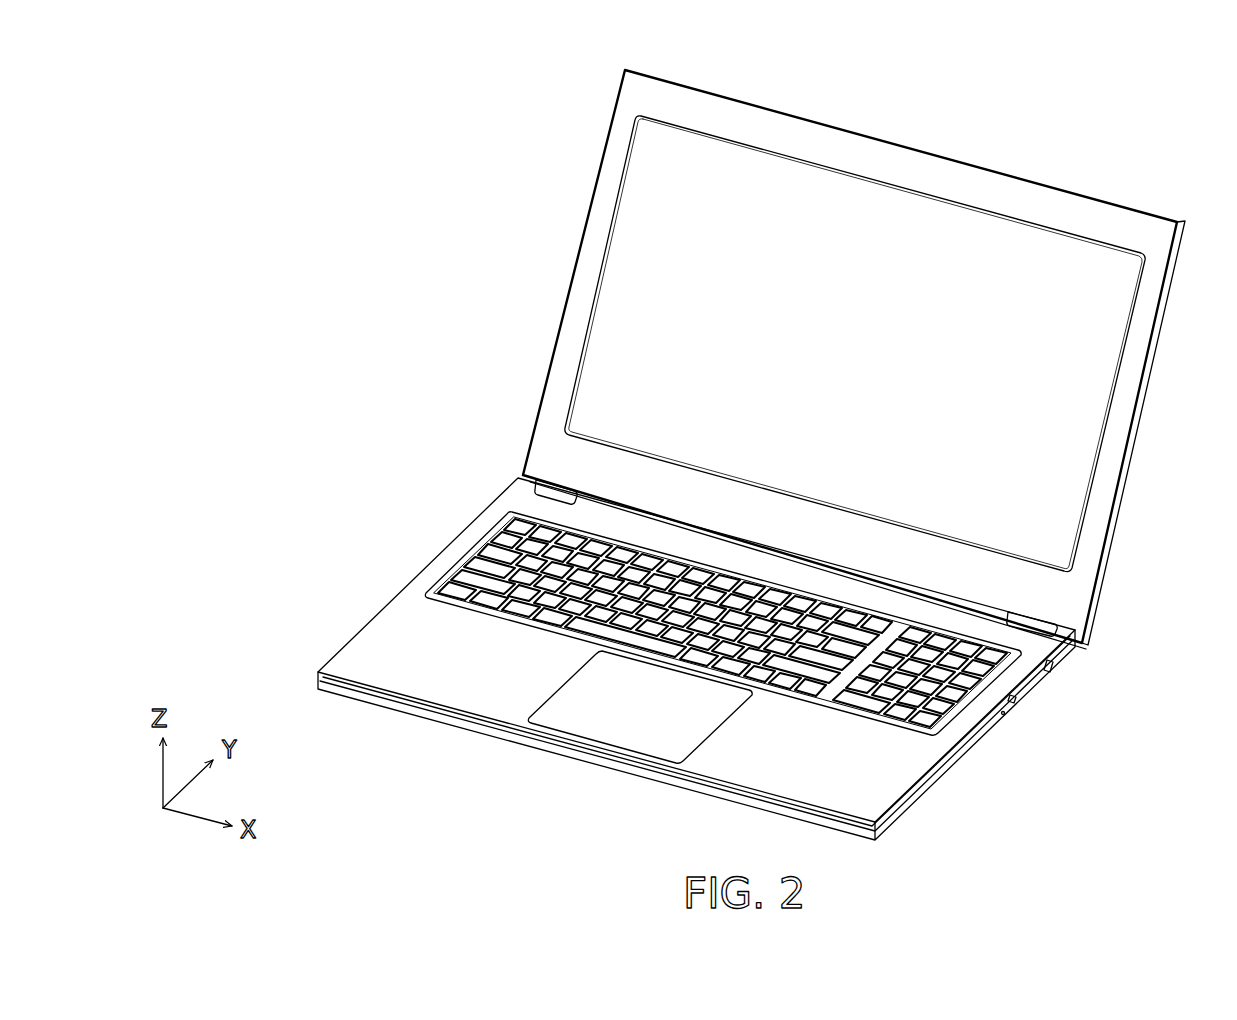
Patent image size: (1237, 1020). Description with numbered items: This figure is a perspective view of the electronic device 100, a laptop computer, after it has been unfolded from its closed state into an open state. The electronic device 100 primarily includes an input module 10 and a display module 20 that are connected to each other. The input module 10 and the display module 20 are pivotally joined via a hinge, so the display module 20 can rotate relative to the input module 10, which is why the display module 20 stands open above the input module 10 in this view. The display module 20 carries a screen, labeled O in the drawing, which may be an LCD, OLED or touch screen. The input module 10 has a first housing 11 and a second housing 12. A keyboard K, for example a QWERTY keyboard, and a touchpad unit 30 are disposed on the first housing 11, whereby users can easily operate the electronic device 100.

The electronic device 100 is at (320, 62).
The display module 20 is at (573, 275).
The display screen O is at (923, 220).
The input module 10 is at (453, 540).
The first housing 11 is at (380, 642).
The second housing 12 is at (370, 705).
The touchpad unit 30 is at (622, 723).
The keyboard K is at (942, 712).